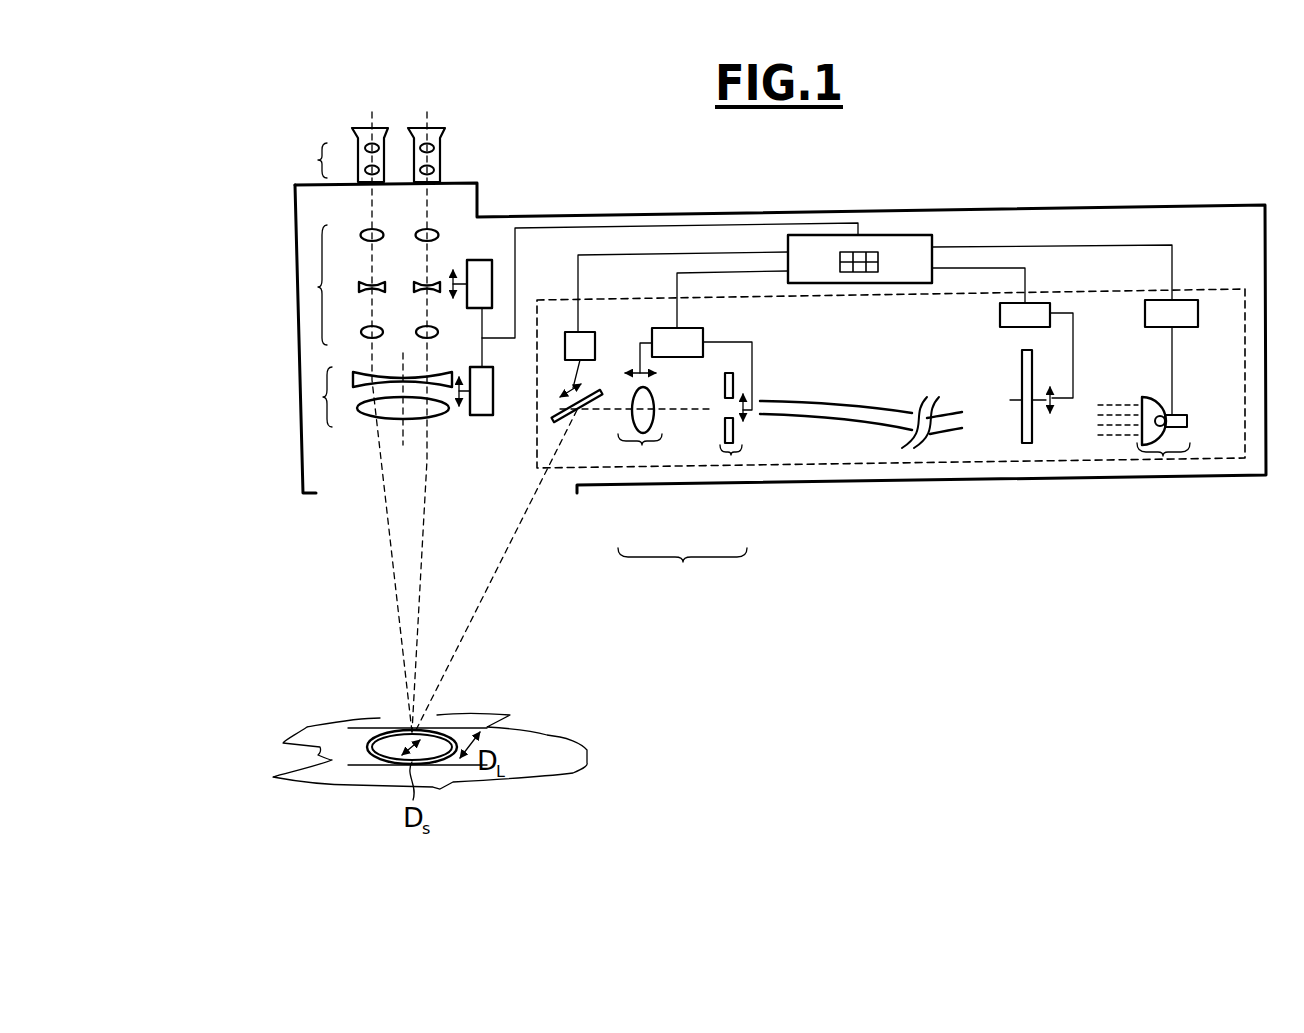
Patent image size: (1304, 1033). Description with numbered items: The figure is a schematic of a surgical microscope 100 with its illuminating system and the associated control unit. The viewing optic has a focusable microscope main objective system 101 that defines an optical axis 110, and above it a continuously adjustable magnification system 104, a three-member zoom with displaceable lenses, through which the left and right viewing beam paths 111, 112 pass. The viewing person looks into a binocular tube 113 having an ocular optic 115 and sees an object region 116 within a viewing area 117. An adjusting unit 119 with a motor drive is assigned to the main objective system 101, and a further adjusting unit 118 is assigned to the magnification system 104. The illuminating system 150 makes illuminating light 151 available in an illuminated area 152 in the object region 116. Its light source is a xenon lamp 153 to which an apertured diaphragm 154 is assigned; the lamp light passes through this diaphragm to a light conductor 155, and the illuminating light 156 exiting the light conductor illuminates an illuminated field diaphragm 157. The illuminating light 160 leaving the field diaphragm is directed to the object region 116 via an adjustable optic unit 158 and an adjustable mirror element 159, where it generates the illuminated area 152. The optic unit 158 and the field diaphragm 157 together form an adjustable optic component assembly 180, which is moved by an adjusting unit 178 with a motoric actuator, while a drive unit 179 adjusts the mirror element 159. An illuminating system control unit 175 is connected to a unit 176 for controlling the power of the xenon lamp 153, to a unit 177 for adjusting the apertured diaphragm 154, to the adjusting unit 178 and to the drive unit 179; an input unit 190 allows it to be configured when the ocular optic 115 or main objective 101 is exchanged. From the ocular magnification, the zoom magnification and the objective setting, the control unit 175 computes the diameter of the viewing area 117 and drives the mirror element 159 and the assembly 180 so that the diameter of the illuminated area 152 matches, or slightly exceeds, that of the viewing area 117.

The surgical microscope 100 is at (230, 130).
The binocular tube 113 is at (427, 130).
The ocular optic 115 is at (318, 160).
The adjustable magnification system 104 is at (318, 287).
The microscope main objective system 101 is at (323, 397).
The optical axis 110 is at (405, 436).
The left viewing beam path 111 is at (395, 588).
The right viewing beam path 112 is at (423, 549).
The adjusting unit 118 is at (486, 260).
The adjusting unit 119 is at (483, 415).
The object region 116 is at (307, 740).
The viewing area 117 is at (383, 752).
The illuminating light 151 is at (467, 638).
The illuminated area 152 is at (448, 733).
The illuminating system 150 is at (840, 463).
The xenon lamp 153 is at (1165, 456).
The apertured diaphragm 154 is at (1027, 443).
The light conductor 155 is at (948, 432).
The illuminating light 156 is at (757, 420).
The illuminated field diaphragm 157 is at (731, 455).
The adjustable optic unit 158 is at (642, 445).
The adjustable mirror element 159 is at (590, 417).
The illuminating light 160 is at (693, 407).
The illuminating system control unit 175 is at (917, 238).
The unit for controlling the power of the xenon lamp 176 is at (1187, 300).
The unit for adjusting the apertured diaphragm 177 is at (1042, 303).
The adjusting unit 178 is at (668, 328).
The drive unit 179 is at (585, 332).
The adjustable optic component assembly 180 is at (682, 571).
The input unit 190 is at (860, 252).